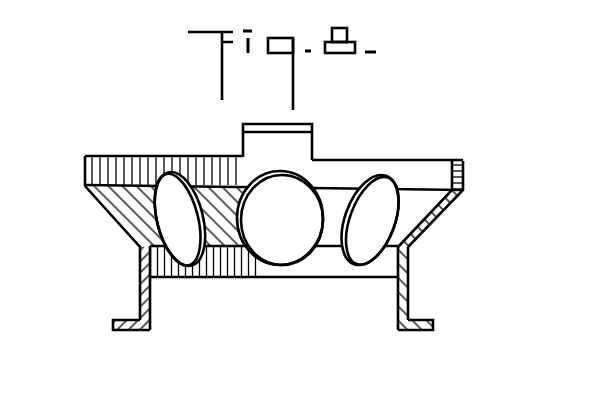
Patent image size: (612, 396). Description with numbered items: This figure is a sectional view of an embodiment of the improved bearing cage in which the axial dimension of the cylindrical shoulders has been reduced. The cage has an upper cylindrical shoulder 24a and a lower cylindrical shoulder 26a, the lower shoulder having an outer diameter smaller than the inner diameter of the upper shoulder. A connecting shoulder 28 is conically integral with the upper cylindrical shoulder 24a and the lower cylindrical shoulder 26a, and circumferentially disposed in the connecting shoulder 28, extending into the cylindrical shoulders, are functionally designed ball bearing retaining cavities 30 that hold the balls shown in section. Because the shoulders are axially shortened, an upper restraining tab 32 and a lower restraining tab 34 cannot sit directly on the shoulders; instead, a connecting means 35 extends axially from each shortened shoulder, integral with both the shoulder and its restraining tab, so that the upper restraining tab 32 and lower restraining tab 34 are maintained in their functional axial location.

The upper cylindrical shoulder 24a is at (427, 172).
The lower cylindrical shoulder 26a is at (321, 268).
The connecting shoulder 28 is at (418, 198).
The ball bearing retaining cavities 30 is at (270, 250).
The upper restraining tab 32 is at (295, 124).
The lower restraining tab 34 is at (422, 332).
The connecting means 35 is at (314, 148).